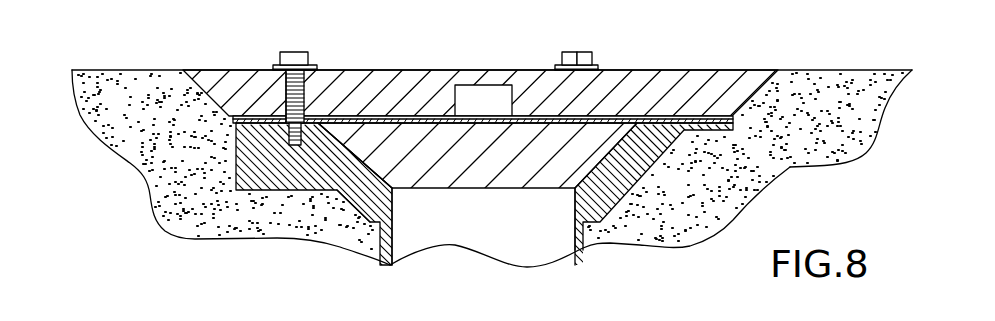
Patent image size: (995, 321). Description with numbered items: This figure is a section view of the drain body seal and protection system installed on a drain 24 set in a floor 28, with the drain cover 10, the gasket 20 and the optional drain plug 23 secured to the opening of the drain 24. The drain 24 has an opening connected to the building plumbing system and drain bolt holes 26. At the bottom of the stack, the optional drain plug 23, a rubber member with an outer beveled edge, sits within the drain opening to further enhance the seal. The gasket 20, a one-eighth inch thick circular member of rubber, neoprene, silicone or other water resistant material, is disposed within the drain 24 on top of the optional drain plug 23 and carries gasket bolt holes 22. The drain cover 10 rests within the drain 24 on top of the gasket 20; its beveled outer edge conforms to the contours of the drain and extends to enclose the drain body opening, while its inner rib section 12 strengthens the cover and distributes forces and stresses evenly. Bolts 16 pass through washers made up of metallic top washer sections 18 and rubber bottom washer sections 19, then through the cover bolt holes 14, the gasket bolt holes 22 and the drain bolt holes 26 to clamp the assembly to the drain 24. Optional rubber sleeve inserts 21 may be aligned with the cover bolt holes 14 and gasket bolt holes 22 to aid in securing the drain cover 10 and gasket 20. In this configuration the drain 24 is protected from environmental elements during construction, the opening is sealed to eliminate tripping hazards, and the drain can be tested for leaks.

The drain cover 10 is at (663, 72).
The inner rib section 12 is at (444, 105).
The cover bolt holes 14 is at (310, 96).
The bolts 16 is at (300, 52).
The metallic top washer sections 18 is at (277, 66).
The rubber bottom washer sections 19 is at (319, 66).
The gasket 20 is at (525, 124).
The rubber sleeve inserts 21 is at (287, 101).
The gasket bolt holes 22 is at (300, 146).
The optional drain plug 23 is at (432, 178).
The drain 24 is at (647, 172).
The drain bolt holes 26 is at (300, 146).
The floor 28 is at (758, 170).